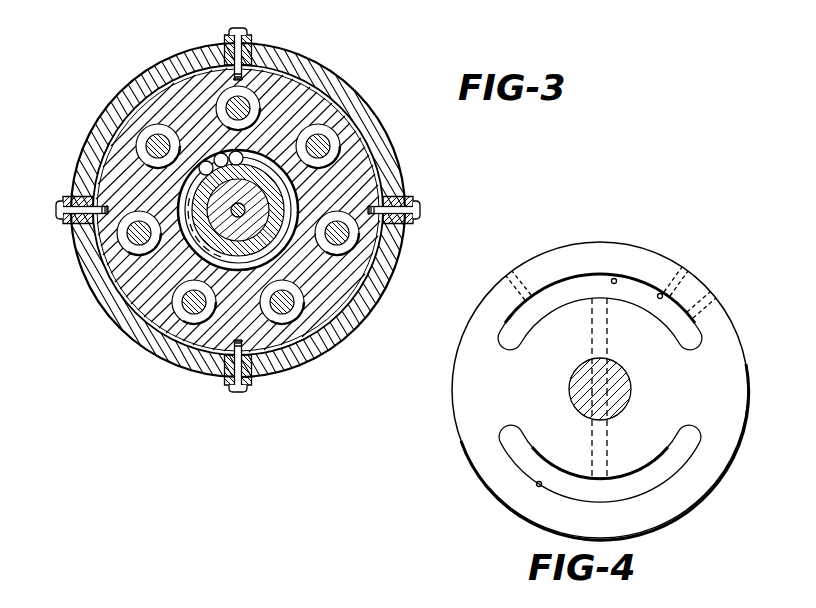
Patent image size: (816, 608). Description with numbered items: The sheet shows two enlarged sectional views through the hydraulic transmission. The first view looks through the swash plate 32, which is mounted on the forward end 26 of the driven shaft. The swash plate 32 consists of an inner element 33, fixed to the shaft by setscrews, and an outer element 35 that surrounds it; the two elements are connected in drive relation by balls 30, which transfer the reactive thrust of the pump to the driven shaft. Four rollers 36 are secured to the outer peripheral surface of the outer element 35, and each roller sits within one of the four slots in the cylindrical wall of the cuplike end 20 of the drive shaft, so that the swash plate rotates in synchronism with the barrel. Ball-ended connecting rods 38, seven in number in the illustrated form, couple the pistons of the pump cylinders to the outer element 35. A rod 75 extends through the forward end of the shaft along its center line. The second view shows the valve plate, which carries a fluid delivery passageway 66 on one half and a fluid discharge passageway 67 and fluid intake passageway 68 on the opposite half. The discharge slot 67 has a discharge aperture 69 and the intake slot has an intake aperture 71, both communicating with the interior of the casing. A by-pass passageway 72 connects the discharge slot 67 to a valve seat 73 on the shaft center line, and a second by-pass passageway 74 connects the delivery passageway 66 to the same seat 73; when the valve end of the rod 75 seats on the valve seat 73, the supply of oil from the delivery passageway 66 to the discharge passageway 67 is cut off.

In FIG. 3, the cuplike end 20 is at (357, 89).
In FIG. 3, the forward end of the driven shaft 26 is at (266, 237).
In FIG. 3, the balls 30 is at (243, 157).
In FIG. 3, the swash plate 32 is at (380, 174).
In FIG. 3, the inner element 33 is at (210, 243).
In FIG. 3, the outer element 35 is at (402, 236).
In FIG. 3, the rollers 36 is at (252, 32).
In FIG. 3, the ball-ended connecting rods 38 is at (138, 210).
In FIG. 3, the rod 75 is at (246, 207).
In FIG. 4, the fluid delivery passageway 66 is at (538, 486).
In FIG. 4, the fluid discharge passageway 67 is at (617, 279).
In FIG. 4, the fluid intake passageway 68 is at (689, 269).
In FIG. 4, the discharge aperture 69 is at (707, 293).
In FIG. 4, the intake aperture 71 is at (522, 272).
In FIG. 4, the by-pass passageway 72 is at (592, 338).
In FIG. 4, the valve seat 73 is at (604, 390).
In FIG. 4, the by-pass passageway 74 is at (603, 442).